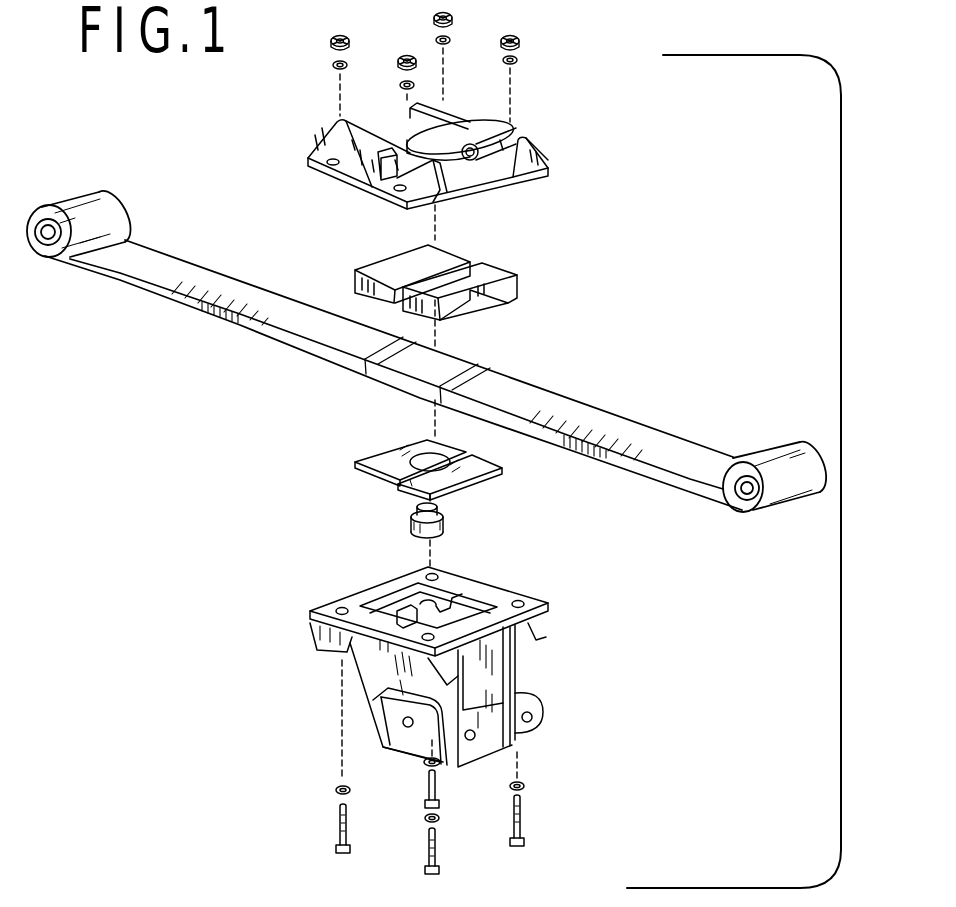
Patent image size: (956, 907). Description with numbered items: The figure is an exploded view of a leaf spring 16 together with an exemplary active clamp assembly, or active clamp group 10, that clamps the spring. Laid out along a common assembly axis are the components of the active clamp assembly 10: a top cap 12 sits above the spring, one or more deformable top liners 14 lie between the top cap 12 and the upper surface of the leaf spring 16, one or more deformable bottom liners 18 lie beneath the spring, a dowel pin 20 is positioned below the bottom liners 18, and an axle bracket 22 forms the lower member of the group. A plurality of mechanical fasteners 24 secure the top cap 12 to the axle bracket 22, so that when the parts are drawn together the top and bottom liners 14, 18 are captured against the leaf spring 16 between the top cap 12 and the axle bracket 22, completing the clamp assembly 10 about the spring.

The active clamp assembly 10 is at (310, 663).
The top cap 12 is at (545, 157).
The deformable top liners 14 is at (500, 263).
The leaf spring 16 is at (152, 292).
The deformable bottom liners 18 is at (398, 448).
The dowel pin 20 is at (447, 518).
The axle bracket 22 is at (548, 712).
The mechanical fasteners 24 is at (527, 815).